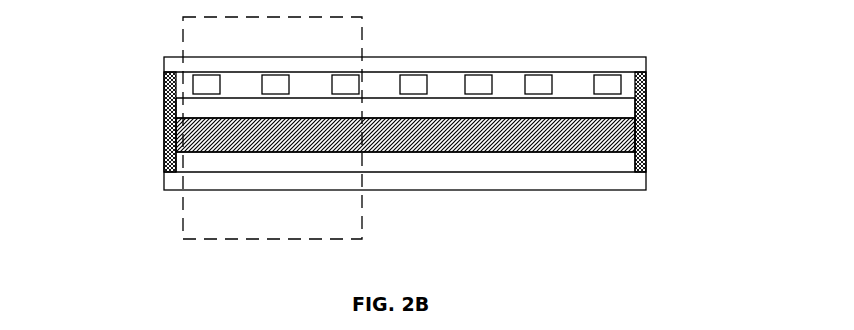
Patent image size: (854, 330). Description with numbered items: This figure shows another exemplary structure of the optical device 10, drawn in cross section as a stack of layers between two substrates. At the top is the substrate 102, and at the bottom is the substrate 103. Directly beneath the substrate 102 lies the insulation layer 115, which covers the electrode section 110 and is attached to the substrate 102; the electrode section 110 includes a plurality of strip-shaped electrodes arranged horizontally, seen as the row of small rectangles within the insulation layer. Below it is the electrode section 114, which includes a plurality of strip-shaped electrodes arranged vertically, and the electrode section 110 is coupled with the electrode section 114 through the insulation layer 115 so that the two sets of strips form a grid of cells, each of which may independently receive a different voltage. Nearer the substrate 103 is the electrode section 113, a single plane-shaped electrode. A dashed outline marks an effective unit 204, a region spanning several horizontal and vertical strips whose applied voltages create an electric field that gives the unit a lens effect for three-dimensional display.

The optical device 10 is at (617, 26).
The substrate 102 is at (197, 65).
The insulation layer 115 is at (192, 89).
The electrode section 110 is at (607, 85).
The electrode section 114 is at (203, 107).
The electrode section 113 is at (613, 165).
The substrate 103 is at (200, 183).
The effective unit 204 is at (215, 223).